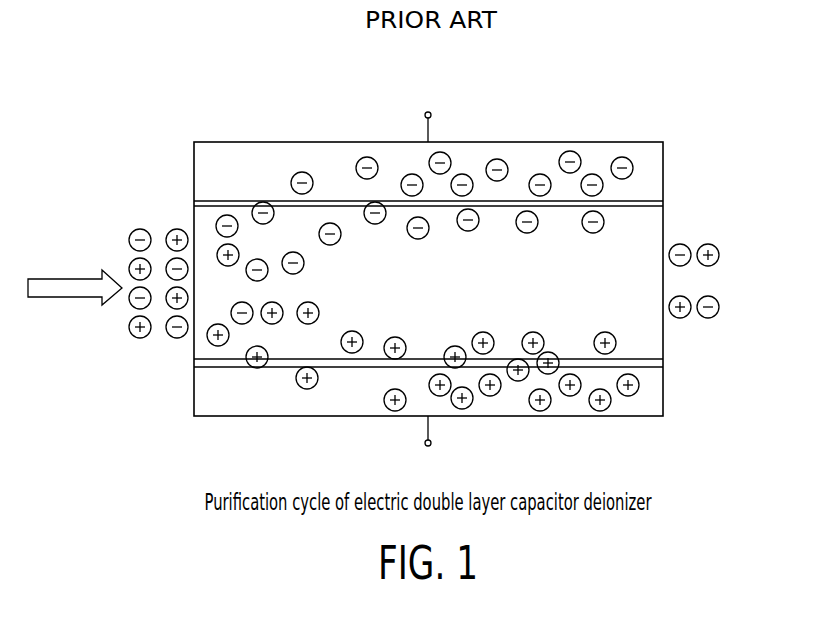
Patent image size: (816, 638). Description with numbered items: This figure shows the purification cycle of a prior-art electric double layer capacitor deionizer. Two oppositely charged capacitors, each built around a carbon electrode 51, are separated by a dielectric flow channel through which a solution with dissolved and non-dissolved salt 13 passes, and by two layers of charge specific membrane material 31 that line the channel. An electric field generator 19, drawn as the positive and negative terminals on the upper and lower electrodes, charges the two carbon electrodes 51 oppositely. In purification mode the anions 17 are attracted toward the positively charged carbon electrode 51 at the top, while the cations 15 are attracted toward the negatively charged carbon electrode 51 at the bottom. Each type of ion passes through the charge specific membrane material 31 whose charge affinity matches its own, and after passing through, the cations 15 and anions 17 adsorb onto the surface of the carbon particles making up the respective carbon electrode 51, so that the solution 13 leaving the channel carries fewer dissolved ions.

The solution with dissolved and non-dissolved salt 13 is at (158, 378).
The cations 15 is at (632, 396).
The anions 17 is at (633, 166).
The electric field generator 19 is at (424, 130).
The charge specific membrane material 31 is at (663, 206).
The carbon electrode 51 is at (208, 170).